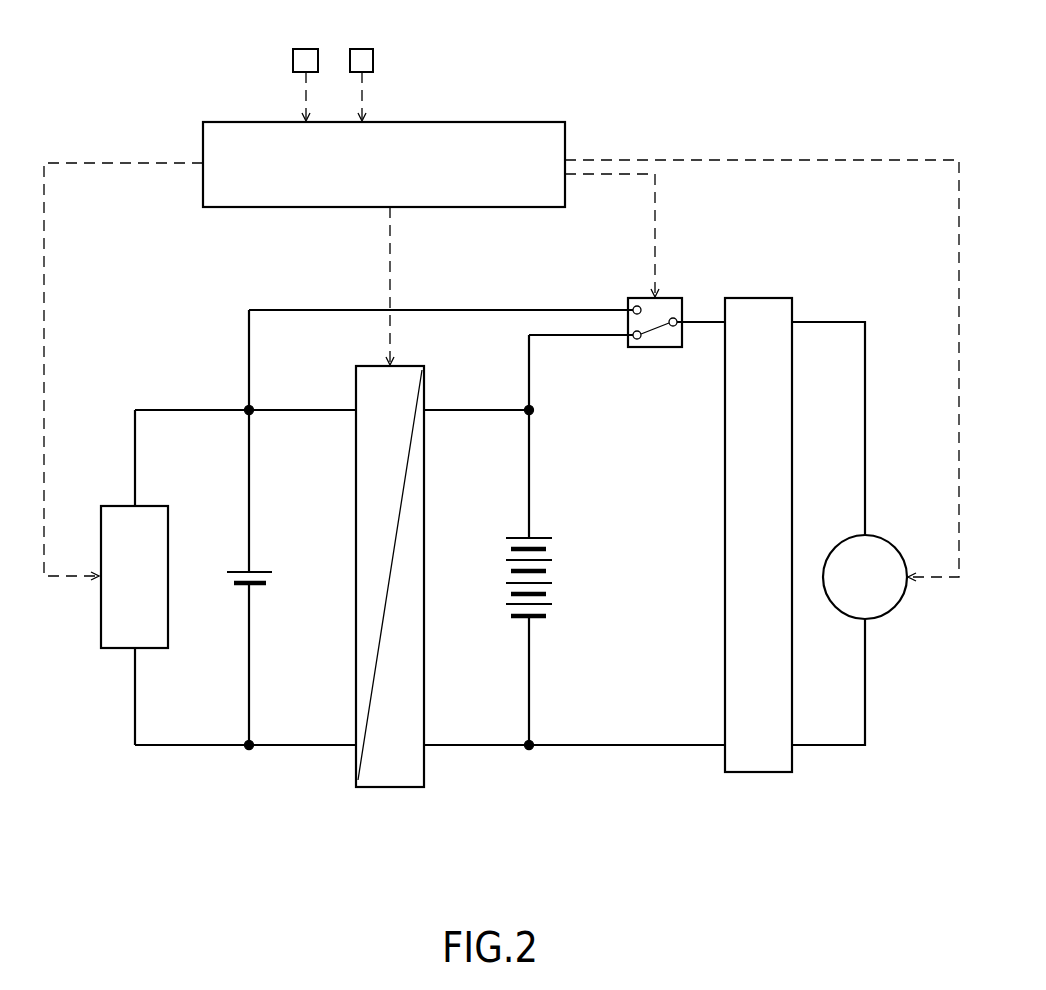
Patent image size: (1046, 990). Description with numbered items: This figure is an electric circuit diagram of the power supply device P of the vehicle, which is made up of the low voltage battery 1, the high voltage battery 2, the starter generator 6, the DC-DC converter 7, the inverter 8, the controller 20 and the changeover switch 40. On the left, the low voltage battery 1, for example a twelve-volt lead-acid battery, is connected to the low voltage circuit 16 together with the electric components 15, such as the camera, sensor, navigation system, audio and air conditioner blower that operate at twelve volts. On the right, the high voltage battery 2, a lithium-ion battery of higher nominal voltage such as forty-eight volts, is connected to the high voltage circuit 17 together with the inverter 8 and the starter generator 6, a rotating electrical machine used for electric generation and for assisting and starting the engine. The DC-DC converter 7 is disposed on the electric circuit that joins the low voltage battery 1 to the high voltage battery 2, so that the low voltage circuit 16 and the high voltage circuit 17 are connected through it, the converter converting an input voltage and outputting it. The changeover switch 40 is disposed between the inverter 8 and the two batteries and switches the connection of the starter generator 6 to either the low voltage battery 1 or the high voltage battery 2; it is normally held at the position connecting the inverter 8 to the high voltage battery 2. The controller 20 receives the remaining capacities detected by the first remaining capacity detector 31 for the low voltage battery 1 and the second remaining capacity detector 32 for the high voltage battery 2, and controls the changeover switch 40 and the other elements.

The low voltage battery 1 is at (265, 570).
The high voltage battery 2 is at (543, 536).
The starter generator 6 is at (881, 551).
The DC-DC converter 7 is at (418, 675).
The inverter 8 is at (766, 300).
The electric components 15 is at (160, 557).
The low voltage circuit 16 is at (288, 407).
The high voltage circuit 17 is at (592, 338).
The controller 20 is at (494, 130).
The first remaining capacity detector 31 is at (303, 45).
The second remaining capacity detector 32 is at (359, 45).
The changeover switch 40 is at (671, 297).
The power supply device P is at (820, 91).